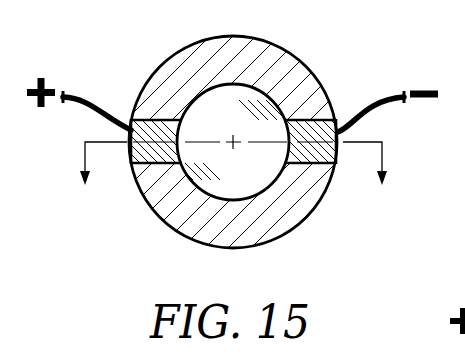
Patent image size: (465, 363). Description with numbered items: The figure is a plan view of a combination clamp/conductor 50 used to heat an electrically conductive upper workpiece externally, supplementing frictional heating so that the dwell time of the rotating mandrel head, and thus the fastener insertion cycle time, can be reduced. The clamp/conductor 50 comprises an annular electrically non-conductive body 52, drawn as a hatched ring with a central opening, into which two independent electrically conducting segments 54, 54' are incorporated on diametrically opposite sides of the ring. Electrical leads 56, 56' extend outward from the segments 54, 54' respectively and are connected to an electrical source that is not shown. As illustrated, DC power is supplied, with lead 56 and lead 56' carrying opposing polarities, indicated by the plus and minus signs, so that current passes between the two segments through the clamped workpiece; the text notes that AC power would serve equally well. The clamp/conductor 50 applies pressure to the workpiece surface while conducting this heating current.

The clamp/conductor 50 is at (316, 56).
The annular electrically non-conductive body 52 is at (176, 75).
The electrically conducting segment 54 is at (144, 183).
The electrically conducting segment 54' is at (315, 183).
The electrical lead 56 is at (79, 77).
The electrical lead 56' is at (394, 119).